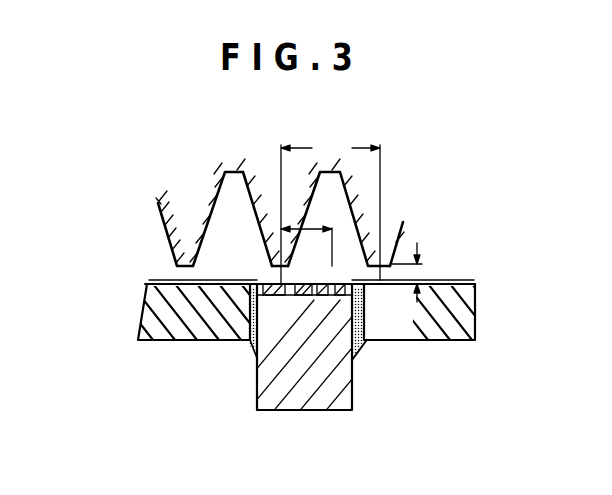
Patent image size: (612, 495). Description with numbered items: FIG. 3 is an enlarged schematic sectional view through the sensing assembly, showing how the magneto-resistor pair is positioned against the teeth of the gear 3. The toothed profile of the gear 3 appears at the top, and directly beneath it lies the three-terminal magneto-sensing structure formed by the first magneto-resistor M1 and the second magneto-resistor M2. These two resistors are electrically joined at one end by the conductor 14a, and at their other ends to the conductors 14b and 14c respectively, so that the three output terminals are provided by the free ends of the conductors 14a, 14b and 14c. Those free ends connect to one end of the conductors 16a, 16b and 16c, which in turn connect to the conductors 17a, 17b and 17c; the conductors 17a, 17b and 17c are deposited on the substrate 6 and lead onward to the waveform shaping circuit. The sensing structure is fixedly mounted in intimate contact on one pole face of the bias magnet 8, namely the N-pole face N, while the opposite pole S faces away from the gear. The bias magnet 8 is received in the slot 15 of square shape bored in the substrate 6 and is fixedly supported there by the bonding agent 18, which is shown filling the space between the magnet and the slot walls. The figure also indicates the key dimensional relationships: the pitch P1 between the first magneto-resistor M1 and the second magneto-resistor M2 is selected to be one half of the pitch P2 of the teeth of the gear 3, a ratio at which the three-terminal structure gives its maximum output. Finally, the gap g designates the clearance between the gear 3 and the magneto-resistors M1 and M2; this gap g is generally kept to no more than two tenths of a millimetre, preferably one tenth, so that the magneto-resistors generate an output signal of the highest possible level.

The gear 3 is at (165, 223).
The substrate 6 is at (142, 321).
The bias magnet 8 is at (355, 396).
The conductor 14a is at (270, 297).
The conductor 14b is at (266, 281).
The conductor 14c is at (362, 297).
The slot 15 is at (366, 344).
The conductor 16a is at (291, 281).
The conductor 16b is at (271, 279).
The conductor 16c is at (345, 272).
The conductor 17a is at (364, 327).
The conductor 17b is at (157, 283).
The conductor 17c is at (470, 283).
The bonding agent 18 is at (252, 354).
The S-pole S is at (299, 397).
The N-pole face N is at (305, 304).
The first magneto-resistor M1 is at (222, 308).
The second magneto-resistor M2 is at (333, 325).
The pitch of the magneto-resistors P1 is at (311, 228).
The pitch of the gear teeth P2 is at (330, 208).
The gap g is at (424, 269).